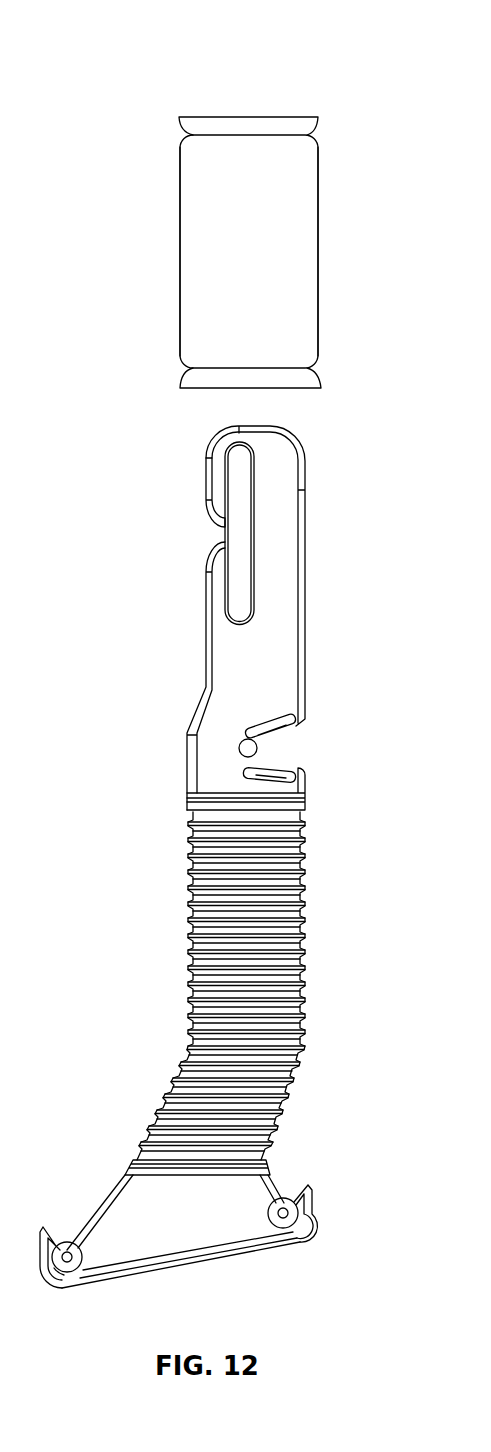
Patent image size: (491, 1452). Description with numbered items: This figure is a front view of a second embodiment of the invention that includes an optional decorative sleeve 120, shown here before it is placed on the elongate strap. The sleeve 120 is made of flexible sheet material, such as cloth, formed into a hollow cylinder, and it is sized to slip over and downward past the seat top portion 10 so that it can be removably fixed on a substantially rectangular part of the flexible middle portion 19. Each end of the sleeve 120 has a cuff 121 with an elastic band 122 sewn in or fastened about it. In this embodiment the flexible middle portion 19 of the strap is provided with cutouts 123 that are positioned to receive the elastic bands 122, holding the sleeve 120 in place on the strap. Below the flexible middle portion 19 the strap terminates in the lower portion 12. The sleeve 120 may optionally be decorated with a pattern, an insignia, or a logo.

The seat top portion 10 is at (277, 659).
The base 12 is at (177, 1221).
The flexible middle portion 19 is at (213, 945).
The decorative sleeve 120 is at (207, 277).
The cuffs 121 is at (257, 378).
The elastic bands 122 is at (308, 367).
The cutouts 123 is at (297, 1052).